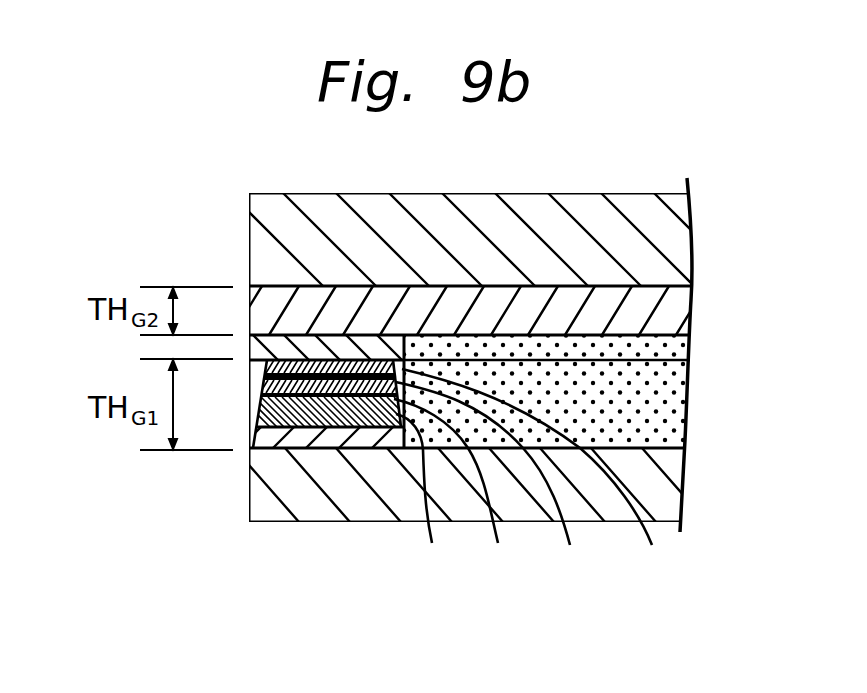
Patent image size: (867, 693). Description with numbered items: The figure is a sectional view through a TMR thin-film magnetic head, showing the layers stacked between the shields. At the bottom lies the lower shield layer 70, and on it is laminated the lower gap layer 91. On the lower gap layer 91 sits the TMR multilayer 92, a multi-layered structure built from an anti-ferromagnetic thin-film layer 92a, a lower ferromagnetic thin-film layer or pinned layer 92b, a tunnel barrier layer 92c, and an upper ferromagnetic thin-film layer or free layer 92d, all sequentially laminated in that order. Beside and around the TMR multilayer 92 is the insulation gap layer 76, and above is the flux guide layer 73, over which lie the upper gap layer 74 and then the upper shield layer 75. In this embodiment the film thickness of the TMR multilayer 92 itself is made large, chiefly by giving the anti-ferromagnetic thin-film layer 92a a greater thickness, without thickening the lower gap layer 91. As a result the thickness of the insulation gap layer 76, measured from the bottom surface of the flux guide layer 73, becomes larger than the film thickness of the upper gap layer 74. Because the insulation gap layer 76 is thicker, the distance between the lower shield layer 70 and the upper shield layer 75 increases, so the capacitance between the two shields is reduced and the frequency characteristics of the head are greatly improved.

The lower shield layer 70 is at (660, 511).
The flux guide layer 73 is at (700, 362).
The upper gap layer 74 is at (676, 324).
The upper shield layer 75 is at (680, 226).
The insulation gap layer 76 is at (670, 421).
The lower gap layer 91 is at (254, 441).
The TMR multilayer 92 is at (541, 512).
The anti-ferromagnetic thin-film layer 92a is at (427, 500).
The lower ferromagnetic thin-film layer (pinned layer) 92b is at (464, 492).
The tunnel barrier layer 92c is at (502, 484).
The upper ferromagnetic thin-film layer (free layer) 92d is at (393, 580).